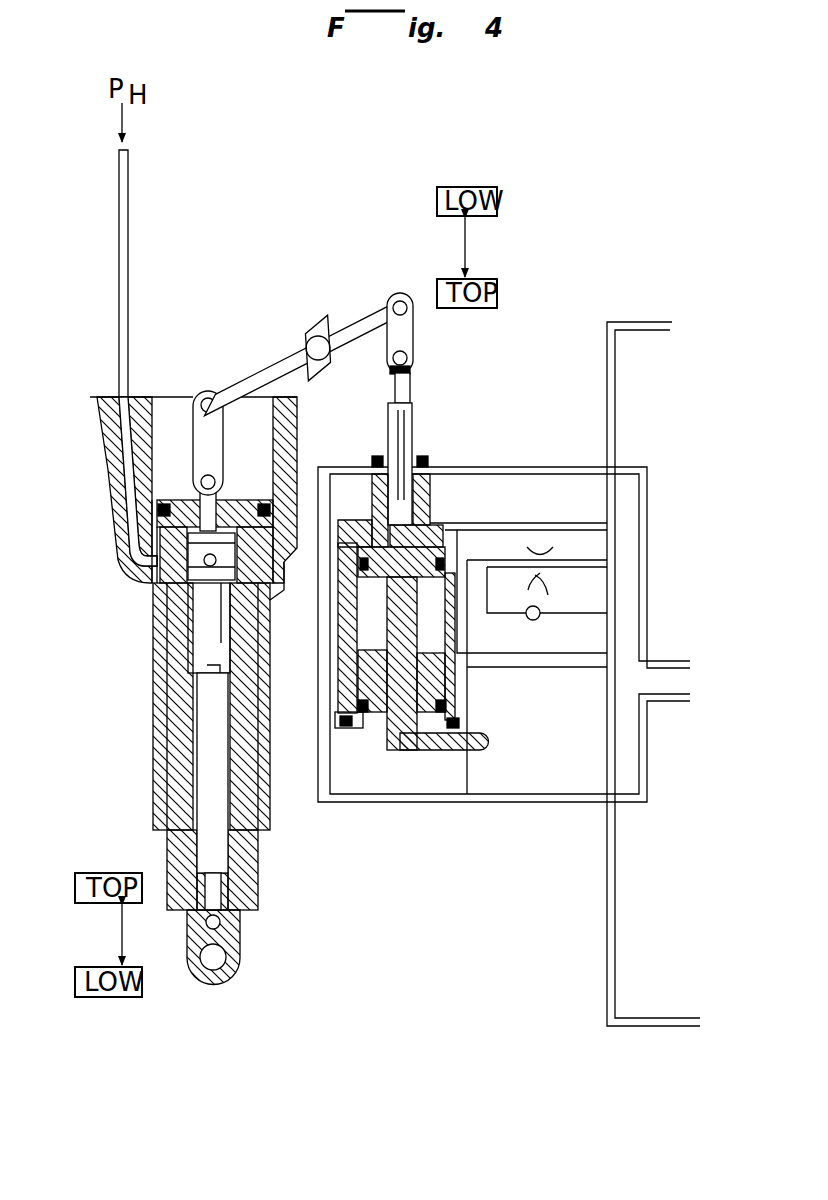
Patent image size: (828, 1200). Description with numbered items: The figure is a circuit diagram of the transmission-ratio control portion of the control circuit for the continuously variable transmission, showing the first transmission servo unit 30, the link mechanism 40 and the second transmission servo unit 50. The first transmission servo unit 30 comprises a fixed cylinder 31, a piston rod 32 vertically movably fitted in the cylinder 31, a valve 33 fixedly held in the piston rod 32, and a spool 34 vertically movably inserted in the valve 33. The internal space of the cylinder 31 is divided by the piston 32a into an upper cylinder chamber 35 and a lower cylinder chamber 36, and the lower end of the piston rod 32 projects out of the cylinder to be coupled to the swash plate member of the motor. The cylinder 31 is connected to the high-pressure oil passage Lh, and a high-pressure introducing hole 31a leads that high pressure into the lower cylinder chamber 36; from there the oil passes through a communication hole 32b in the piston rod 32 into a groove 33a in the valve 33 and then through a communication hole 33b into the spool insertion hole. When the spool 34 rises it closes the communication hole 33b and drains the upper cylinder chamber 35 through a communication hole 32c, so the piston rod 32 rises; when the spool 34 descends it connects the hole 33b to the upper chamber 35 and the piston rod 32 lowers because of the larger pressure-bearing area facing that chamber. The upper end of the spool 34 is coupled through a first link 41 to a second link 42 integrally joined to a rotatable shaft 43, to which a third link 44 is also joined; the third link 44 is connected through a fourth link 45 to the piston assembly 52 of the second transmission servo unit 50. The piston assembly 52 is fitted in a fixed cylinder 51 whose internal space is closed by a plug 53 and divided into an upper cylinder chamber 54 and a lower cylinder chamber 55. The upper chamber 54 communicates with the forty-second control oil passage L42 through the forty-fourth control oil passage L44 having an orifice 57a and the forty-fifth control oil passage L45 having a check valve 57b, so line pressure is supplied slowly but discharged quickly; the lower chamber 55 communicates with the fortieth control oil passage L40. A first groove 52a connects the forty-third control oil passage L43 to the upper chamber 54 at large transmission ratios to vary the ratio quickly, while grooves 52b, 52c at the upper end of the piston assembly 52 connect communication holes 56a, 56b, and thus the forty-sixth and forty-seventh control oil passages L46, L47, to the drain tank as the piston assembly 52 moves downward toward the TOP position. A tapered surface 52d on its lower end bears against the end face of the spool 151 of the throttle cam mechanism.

The first transmission servo unit 30 is at (188, 691).
The fixed cylinder 31 is at (153, 650).
The high-pressure introducing hole 31a is at (120, 530).
The piston rod 32 is at (175, 776).
The piston 32a is at (120, 517).
The communication hole 32b is at (133, 590).
The communication hole 32c is at (232, 848).
The valve 33 is at (147, 613).
The groove 33a is at (245, 648).
The communication hole 33b is at (153, 673).
The spool 34 is at (215, 498).
The upper cylinder chamber 35 is at (107, 483).
The lower cylinder chamber 36 is at (288, 560).
The link mechanism 40 is at (316, 355).
The first link 41 is at (197, 400).
The second link 42 is at (267, 363).
The rotatable shaft 43 is at (315, 340).
The third link 44 is at (370, 312).
The fourth link 45 is at (417, 330).
The second transmission servo unit 50 is at (511, 653).
The fixed cylinder 51 is at (450, 628).
The piston assembly 52 is at (360, 680).
The first groove 52a is at (435, 520).
The groove 52b is at (390, 390).
The groove 52c is at (410, 395).
The tapered surface 52d is at (415, 752).
The plug 53 is at (355, 728).
The upper cylinder chamber 54 is at (350, 520).
The lower cylinder chamber 55 is at (450, 712).
The communication hole 56a is at (375, 458).
The communication hole 56b is at (432, 460).
The orifice 57a is at (548, 592).
The check valve 57b is at (535, 620).
The spool 151 is at (490, 752).
The high-pressure oil passage Lh is at (128, 240).
The fortieth control oil passage L40 is at (645, 1018).
The forty-second control oil passage L42 is at (645, 328).
The forty-third control oil passage L43 is at (545, 527).
The forty-fourth control oil passage L44 is at (570, 566).
The forty-fifth control oil passage L45 is at (578, 630).
The forty-sixth control oil passage L46 is at (672, 704).
The forty-seventh control oil passage L47 is at (672, 668).